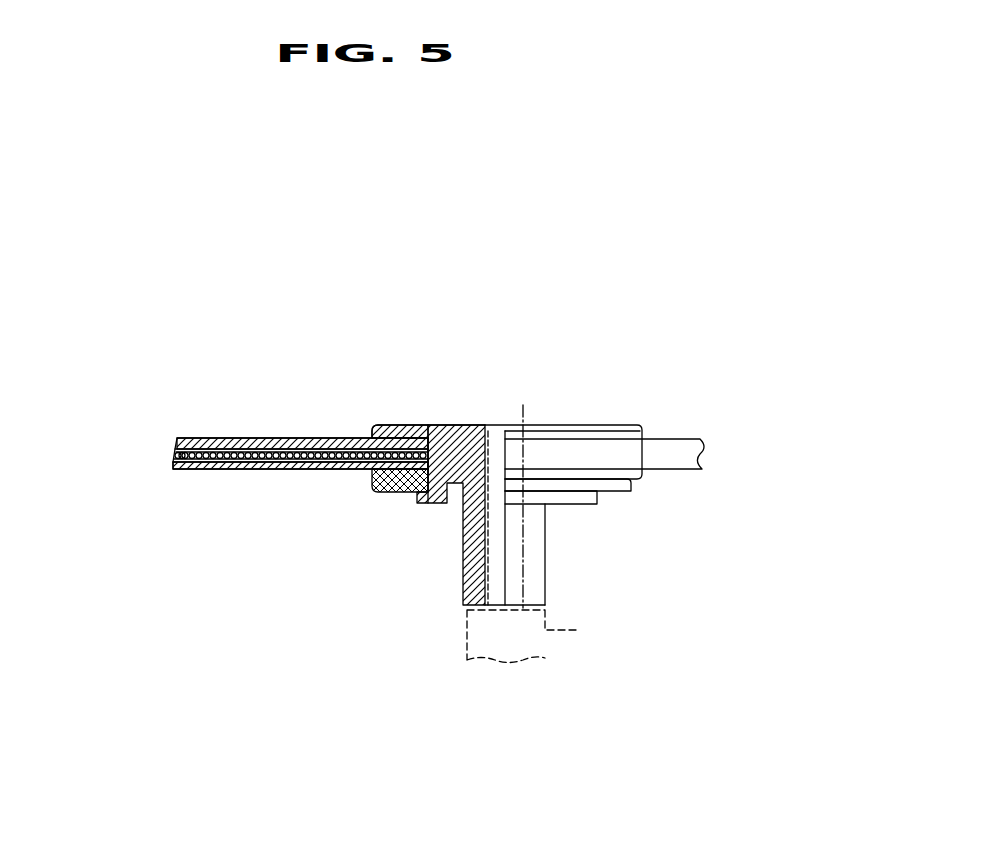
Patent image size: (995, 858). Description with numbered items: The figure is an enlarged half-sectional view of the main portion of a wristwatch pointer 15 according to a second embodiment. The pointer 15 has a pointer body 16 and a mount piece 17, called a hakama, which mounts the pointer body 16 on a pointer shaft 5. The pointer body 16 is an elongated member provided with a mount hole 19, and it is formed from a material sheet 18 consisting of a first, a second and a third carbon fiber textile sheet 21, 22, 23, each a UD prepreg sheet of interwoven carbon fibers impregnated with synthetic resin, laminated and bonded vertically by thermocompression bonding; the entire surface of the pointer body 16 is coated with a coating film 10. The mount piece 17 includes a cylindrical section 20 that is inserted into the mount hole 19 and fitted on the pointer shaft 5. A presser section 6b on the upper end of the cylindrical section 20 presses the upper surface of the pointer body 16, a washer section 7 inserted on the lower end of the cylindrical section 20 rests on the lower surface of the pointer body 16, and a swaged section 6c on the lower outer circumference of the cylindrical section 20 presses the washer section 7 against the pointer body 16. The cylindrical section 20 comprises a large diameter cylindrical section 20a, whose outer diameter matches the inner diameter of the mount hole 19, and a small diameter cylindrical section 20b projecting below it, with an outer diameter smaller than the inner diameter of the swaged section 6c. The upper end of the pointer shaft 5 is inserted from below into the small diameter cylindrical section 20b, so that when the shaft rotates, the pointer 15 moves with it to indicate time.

The pointer shaft 5 is at (578, 630).
The presser section 6b is at (489, 472).
The swaged section 6c is at (433, 505).
The washer section 7 is at (383, 494).
The coating film 10 is at (240, 443).
The pointer 15 is at (581, 377).
The pointer body 16 is at (392, 438).
The mount piece 17 is at (612, 423).
The material sheet 18 is at (235, 462).
The mount hole 19 is at (436, 437).
The cylindrical section 20 is at (502, 452).
The large diameter cylindrical section 20a is at (462, 450).
The small diameter cylindrical section 20b is at (478, 520).
The first carbon fiber textile sheet 21 is at (185, 446).
The second carbon fiber textile sheet 22 is at (178, 455).
The third carbon fiber textile sheet 23 is at (267, 484).